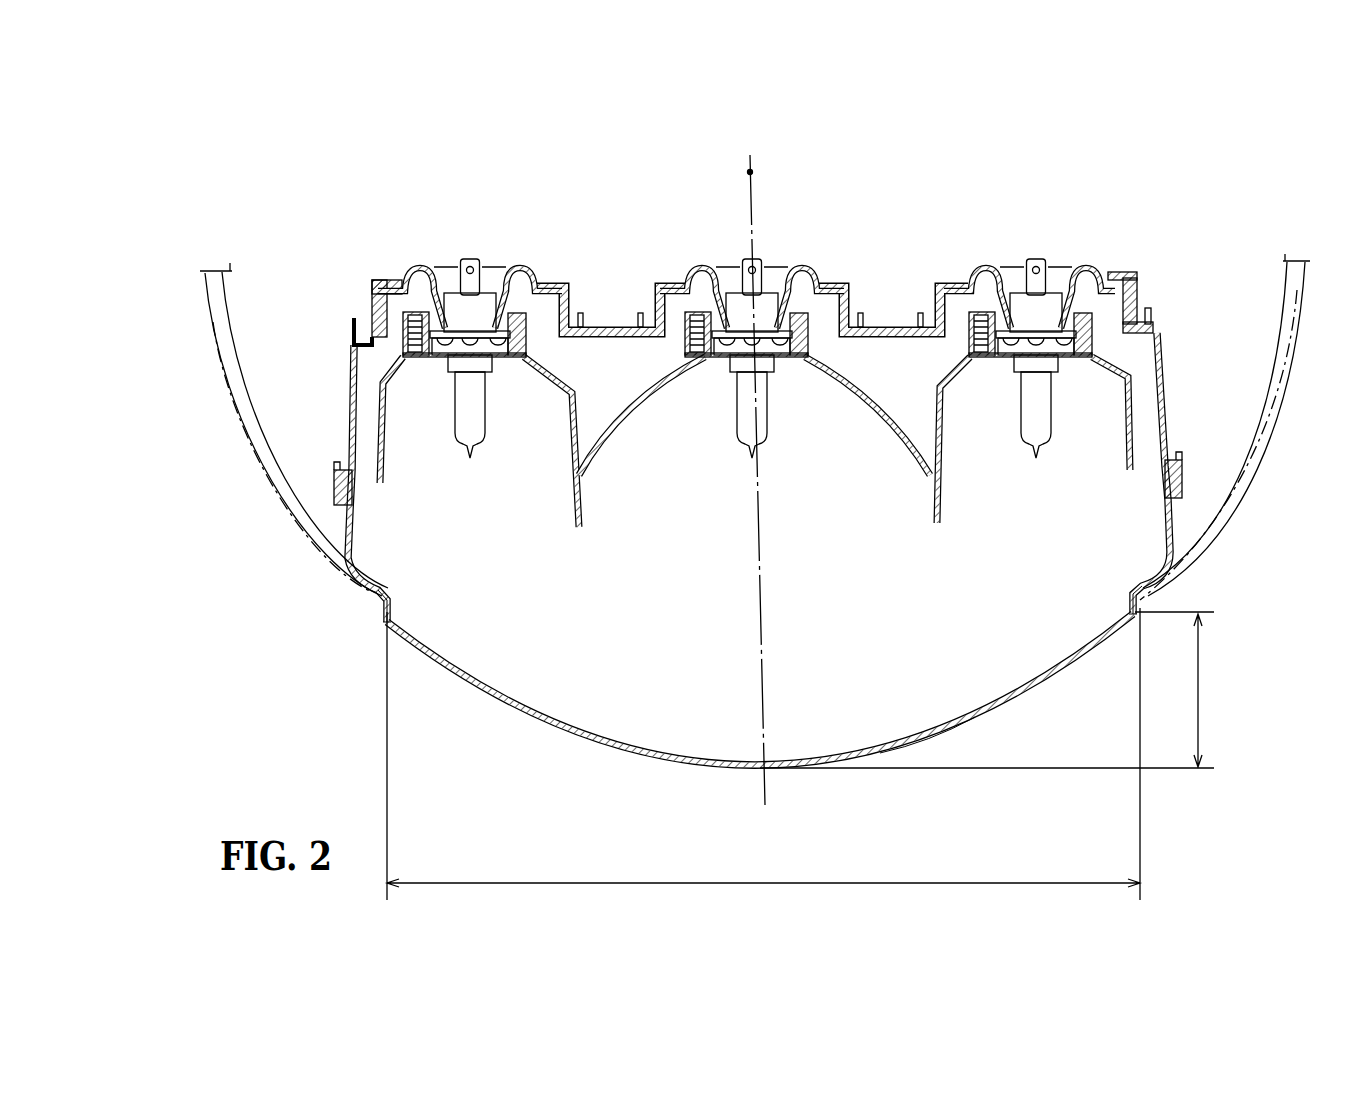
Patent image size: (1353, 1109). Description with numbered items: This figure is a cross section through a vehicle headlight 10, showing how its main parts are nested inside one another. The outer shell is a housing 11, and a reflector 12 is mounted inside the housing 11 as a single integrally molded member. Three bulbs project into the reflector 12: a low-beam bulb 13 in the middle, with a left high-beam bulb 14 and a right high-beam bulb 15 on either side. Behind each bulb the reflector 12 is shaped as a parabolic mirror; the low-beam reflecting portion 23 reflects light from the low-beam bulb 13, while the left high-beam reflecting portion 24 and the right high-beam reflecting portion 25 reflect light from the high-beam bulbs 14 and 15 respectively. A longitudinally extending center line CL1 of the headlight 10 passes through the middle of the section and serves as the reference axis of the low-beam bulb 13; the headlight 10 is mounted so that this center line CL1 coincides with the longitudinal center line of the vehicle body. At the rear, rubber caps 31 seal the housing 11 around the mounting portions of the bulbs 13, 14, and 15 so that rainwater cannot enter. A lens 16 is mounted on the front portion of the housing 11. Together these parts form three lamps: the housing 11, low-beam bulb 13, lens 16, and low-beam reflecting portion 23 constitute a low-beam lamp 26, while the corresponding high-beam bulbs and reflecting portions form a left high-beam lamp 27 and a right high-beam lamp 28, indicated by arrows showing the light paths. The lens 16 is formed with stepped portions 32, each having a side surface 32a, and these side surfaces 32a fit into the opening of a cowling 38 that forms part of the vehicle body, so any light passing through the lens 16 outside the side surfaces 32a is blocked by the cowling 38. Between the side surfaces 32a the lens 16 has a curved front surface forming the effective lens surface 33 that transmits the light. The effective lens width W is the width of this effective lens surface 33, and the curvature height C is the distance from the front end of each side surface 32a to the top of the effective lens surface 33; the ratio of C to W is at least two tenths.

The headlight 10 is at (292, 236).
The housing 11 is at (1158, 355).
The reflector 12 is at (1135, 423).
The low-beam bulb 13 is at (773, 420).
The left high-beam bulb 14 is at (1057, 413).
The right high-beam bulb 15 is at (490, 413).
The lens 16 is at (550, 722).
The low-beam reflecting portion 23 is at (648, 407).
The left high-beam reflecting portion 24 is at (963, 377).
The right high-beam reflecting portion 25 is at (405, 378).
The low-beam lamp 26 is at (715, 603).
The left high-beam lamp 27 is at (1037, 528).
The right high-beam lamp 28 is at (487, 548).
The rubber cap 31 is at (417, 270).
The stepped portion 32 is at (378, 592).
The side surface 32a is at (383, 610).
The effective lens surface 33 is at (930, 735).
The cowling 38 is at (252, 452).
The center line CL1 is at (752, 172).
The effective lens width W is at (763, 754).
The curvature height C is at (987, 690).